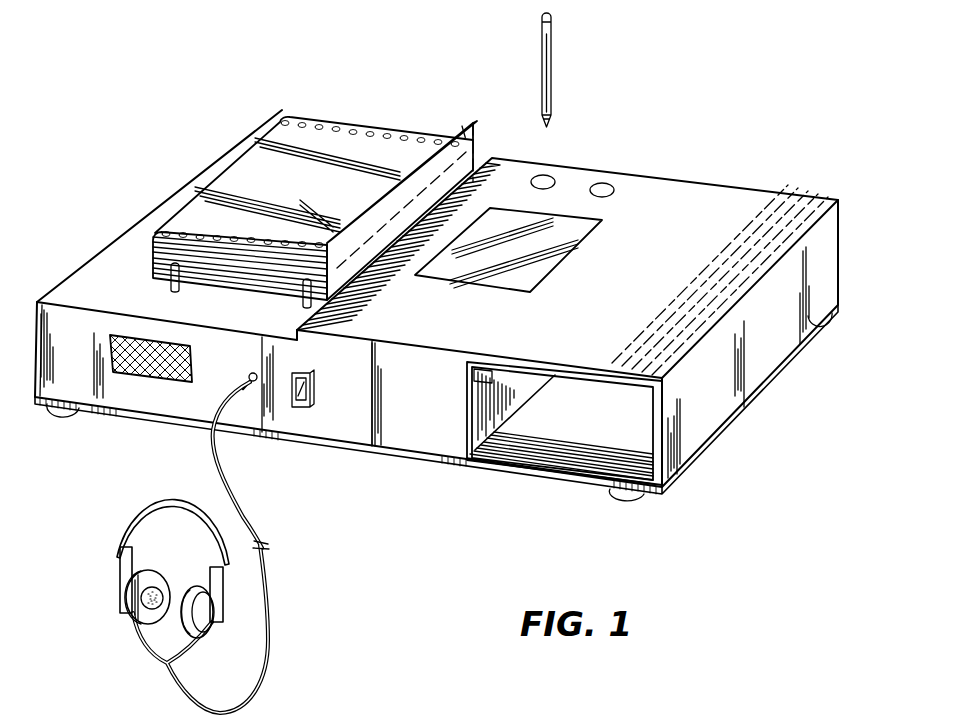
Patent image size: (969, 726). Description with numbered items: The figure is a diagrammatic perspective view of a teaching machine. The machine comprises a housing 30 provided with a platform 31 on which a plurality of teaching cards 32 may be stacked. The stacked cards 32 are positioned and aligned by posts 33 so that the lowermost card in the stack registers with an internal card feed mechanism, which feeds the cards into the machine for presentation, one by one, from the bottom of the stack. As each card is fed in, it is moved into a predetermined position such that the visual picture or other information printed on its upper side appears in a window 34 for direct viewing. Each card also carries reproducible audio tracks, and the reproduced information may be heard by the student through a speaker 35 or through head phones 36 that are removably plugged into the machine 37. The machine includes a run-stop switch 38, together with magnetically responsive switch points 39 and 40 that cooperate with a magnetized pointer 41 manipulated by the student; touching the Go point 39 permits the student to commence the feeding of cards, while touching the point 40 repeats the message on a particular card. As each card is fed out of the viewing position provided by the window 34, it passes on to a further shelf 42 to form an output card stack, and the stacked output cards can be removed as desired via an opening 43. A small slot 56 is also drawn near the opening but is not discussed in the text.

The housing 30 is at (167, 395).
The platform 31 is at (92, 287).
The teaching cards 32 is at (218, 183).
The posts 33 is at (175, 288).
The window 34 is at (568, 246).
The speaker 35 is at (190, 362).
The head phones 36 is at (138, 608).
The machine plug-in point 37 is at (246, 379).
The run-stop switch 38 is at (312, 392).
The Go switch point 39 is at (612, 186).
The repeat switch point 40 is at (552, 177).
The magnetized pointer 41 is at (548, 97).
The shelf 42 is at (577, 448).
The opening 43 is at (482, 424).
The slot 56 is at (484, 373).